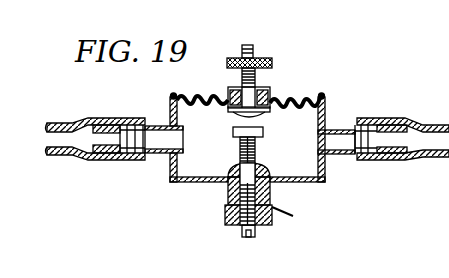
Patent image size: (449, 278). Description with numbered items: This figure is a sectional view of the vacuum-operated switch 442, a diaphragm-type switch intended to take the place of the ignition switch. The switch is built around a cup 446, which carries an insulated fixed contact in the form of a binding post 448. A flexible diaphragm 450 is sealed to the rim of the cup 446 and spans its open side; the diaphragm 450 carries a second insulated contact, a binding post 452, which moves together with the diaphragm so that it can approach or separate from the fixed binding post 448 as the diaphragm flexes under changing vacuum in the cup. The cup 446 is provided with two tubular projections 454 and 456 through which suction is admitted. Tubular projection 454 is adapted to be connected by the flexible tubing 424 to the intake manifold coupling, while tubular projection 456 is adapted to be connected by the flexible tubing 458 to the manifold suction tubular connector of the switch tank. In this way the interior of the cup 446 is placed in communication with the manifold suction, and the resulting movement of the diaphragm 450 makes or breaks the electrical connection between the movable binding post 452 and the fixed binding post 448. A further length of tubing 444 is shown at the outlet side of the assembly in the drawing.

The flexible tubing 424 is at (107, 118).
The tubular projection 454 is at (152, 125).
The cup 446 is at (326, 114).
The flexible diaphragm 450 is at (207, 97).
The vacuum-operated switch 442 is at (283, 124).
The binding post 452 is at (232, 119).
The binding post 448 is at (236, 134).
The tubular projection 456 is at (337, 154).
The flexible tubing 458 is at (388, 160).
The outlet tube 444 is at (403, 121).